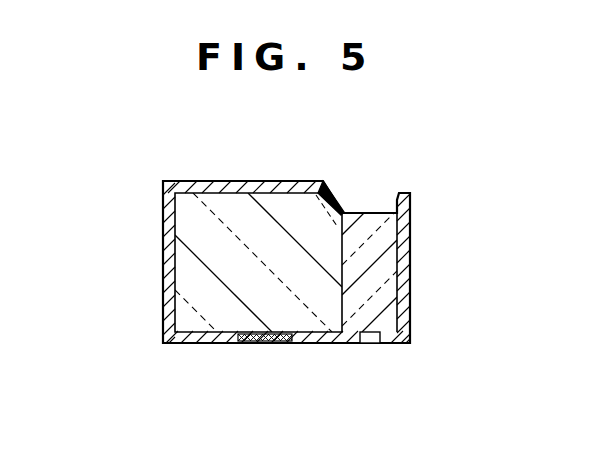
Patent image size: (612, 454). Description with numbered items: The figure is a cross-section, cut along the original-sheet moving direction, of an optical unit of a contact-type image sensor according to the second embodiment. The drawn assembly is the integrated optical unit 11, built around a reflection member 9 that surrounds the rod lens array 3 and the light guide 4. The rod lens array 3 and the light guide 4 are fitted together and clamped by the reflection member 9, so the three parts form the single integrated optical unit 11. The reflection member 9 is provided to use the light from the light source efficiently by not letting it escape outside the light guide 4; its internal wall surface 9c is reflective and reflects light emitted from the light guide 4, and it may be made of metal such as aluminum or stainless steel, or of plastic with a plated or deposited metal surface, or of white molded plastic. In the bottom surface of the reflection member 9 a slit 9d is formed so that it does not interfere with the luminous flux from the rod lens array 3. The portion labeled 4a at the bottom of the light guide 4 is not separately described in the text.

The integrated optical unit 11 is at (256, 162).
The reflection member 9 is at (406, 312).
The light guide 4 is at (213, 269).
The rod lens array 3 is at (378, 243).
The internal wall surface 9c is at (292, 341).
The slit 9d is at (372, 343).
The bottom surface 4a is at (243, 342).